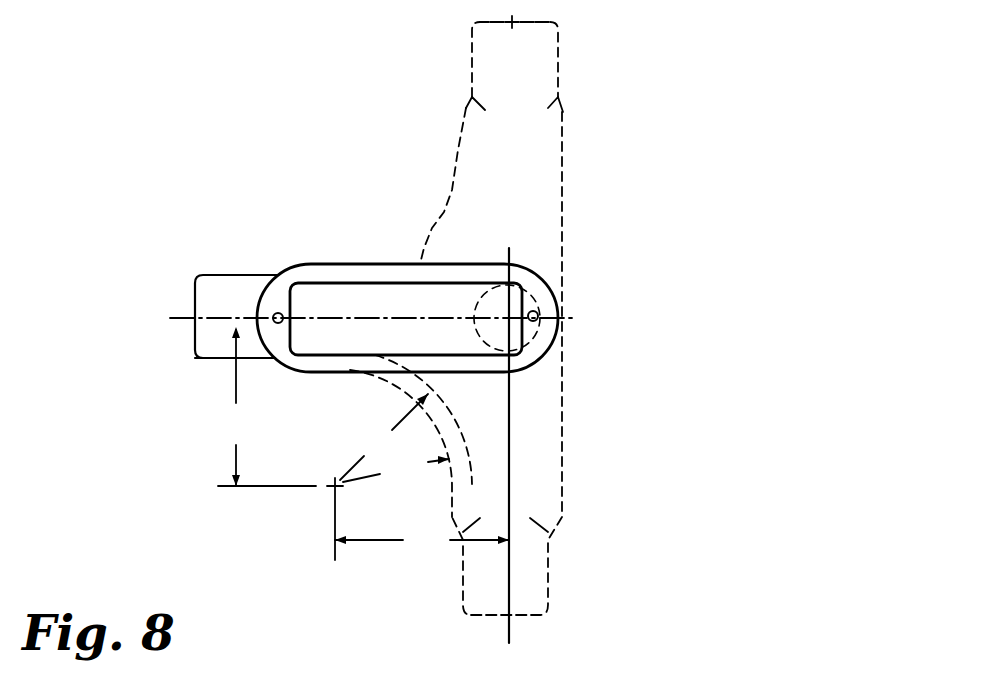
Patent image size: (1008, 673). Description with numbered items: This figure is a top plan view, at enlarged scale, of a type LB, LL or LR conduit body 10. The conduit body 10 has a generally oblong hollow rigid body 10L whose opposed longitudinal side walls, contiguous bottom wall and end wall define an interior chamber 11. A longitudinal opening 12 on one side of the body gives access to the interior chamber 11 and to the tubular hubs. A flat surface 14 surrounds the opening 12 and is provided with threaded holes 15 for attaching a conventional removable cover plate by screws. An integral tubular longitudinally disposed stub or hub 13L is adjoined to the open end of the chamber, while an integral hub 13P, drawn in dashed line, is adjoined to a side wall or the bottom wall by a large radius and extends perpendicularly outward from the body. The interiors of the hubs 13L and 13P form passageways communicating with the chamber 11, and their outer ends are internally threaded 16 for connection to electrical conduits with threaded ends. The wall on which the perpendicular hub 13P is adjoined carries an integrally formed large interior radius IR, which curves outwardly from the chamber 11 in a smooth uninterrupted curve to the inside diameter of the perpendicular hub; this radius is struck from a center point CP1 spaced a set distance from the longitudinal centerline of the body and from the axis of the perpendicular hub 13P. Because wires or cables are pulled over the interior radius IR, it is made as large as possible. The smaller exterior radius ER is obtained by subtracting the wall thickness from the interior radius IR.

The conduit body 10 is at (612, 224).
The oblong hollow rigid body 10L is at (417, 243).
The interior chamber 11 is at (405, 315).
The longitudinal opening 12 is at (335, 288).
The longitudinal hub 13L is at (208, 302).
The perpendicular hub 13P is at (553, 68).
The flat surface 14 is at (438, 273).
The threaded holes 15 is at (278, 312).
The internal threads 16 is at (198, 348).
The center point CP1 is at (363, 443).
The interior radius IR is at (384, 437).
The exterior radius ER is at (396, 471).